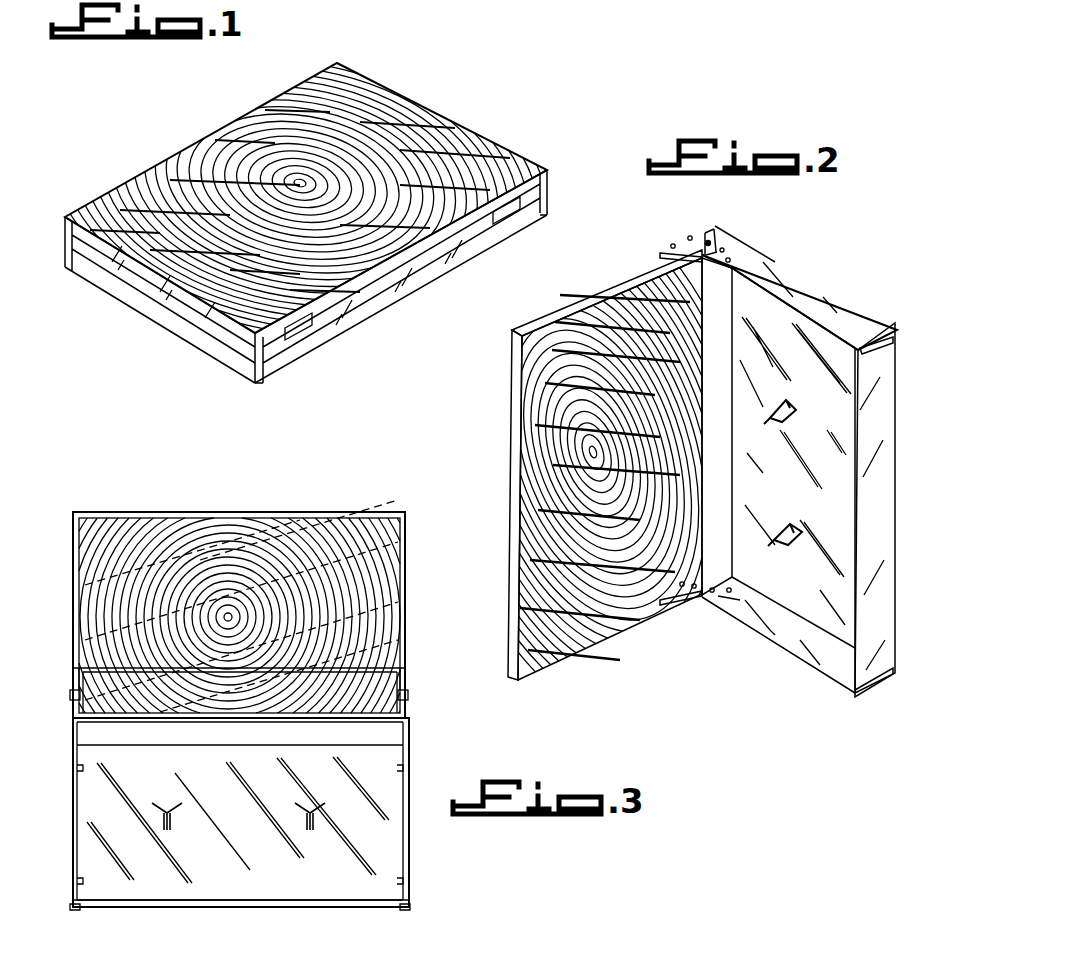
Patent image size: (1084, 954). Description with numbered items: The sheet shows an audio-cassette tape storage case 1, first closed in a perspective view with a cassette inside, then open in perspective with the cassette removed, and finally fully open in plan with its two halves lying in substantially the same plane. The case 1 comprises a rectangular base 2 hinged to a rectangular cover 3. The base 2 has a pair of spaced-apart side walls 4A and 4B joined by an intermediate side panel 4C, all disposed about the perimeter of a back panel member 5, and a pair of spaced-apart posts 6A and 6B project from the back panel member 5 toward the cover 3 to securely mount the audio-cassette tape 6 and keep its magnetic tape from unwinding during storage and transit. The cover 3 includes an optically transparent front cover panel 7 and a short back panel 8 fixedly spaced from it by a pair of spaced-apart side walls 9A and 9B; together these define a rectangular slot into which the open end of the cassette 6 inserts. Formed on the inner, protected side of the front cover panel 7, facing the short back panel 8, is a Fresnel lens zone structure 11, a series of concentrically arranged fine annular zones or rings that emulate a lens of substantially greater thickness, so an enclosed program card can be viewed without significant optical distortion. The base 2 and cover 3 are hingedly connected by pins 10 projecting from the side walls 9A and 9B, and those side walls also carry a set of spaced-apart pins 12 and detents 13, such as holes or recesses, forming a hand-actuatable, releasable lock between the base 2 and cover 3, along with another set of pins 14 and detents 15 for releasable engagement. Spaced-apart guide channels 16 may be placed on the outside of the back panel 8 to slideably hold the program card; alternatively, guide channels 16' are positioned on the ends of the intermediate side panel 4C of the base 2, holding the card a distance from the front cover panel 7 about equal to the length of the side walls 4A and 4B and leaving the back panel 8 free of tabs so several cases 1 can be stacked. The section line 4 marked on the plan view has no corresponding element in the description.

In FIG. 1, the audio-cassette tape storage case 1 is at (238, 80).
In FIG. 2, the rectangular base 2 is at (836, 280).
In FIG. 2, the rectangular cover 3 is at (566, 298).
In FIG. 3, the section line 4 is at (60, 868).
In FIG. 2, the side wall 4A is at (800, 315).
In FIG. 3, the side wall 4A is at (408, 786).
In FIG. 2, the side wall 4B is at (786, 653).
In FIG. 3, the side wall 4B is at (77, 787).
In FIG. 2, the intermediate side panel 4C is at (861, 437).
In FIG. 3, the intermediate side panel 4C is at (215, 908).
In FIG. 2, the back panel member 5 is at (789, 480).
In FIG. 3, the back panel member 5 is at (125, 501).
In FIG. 1, the audio-cassette tape 6 is at (142, 300).
In FIG. 2, the post 6A is at (790, 418).
In FIG. 3, the post 6A is at (315, 828).
In FIG. 2, the post 6B is at (796, 575).
In FIG. 3, the post 6B is at (165, 831).
In FIG. 2, the optically transparent front cover panel 7 is at (521, 396).
In FIG. 3, the optically transparent front cover panel 7 is at (344, 560).
In FIG. 3, the short back panel 8 is at (376, 658).
In FIG. 2, the side wall 9A is at (674, 244).
In FIG. 2, the side wall 9B is at (684, 598).
In FIG. 2, the pins 10 is at (713, 240).
In FIG. 3, the pins 10 is at (80, 693).
In FIG. 1, the Fresnel lens zone structure 11 is at (297, 178).
In FIG. 2, the Fresnel lens zone structure 11 is at (622, 455).
In FIG. 3, the Fresnel lens zone structure 11 is at (258, 608).
In FIG. 2, the pins 12 is at (674, 242).
In FIG. 2, the detents 13 is at (776, 262).
In FIG. 2, the pins 14 is at (690, 236).
In FIG. 2, the detents 15 is at (727, 246).
In FIG. 2, the guide channels 16 is at (766, 445).
In FIG. 3, the guide channels 16 is at (245, 649).
In FIG. 1, the guide channel 16' is at (371, 289).
In FIG. 2, the guide channel 16' is at (879, 514).
In FIG. 3, the guide channel 16' is at (240, 925).